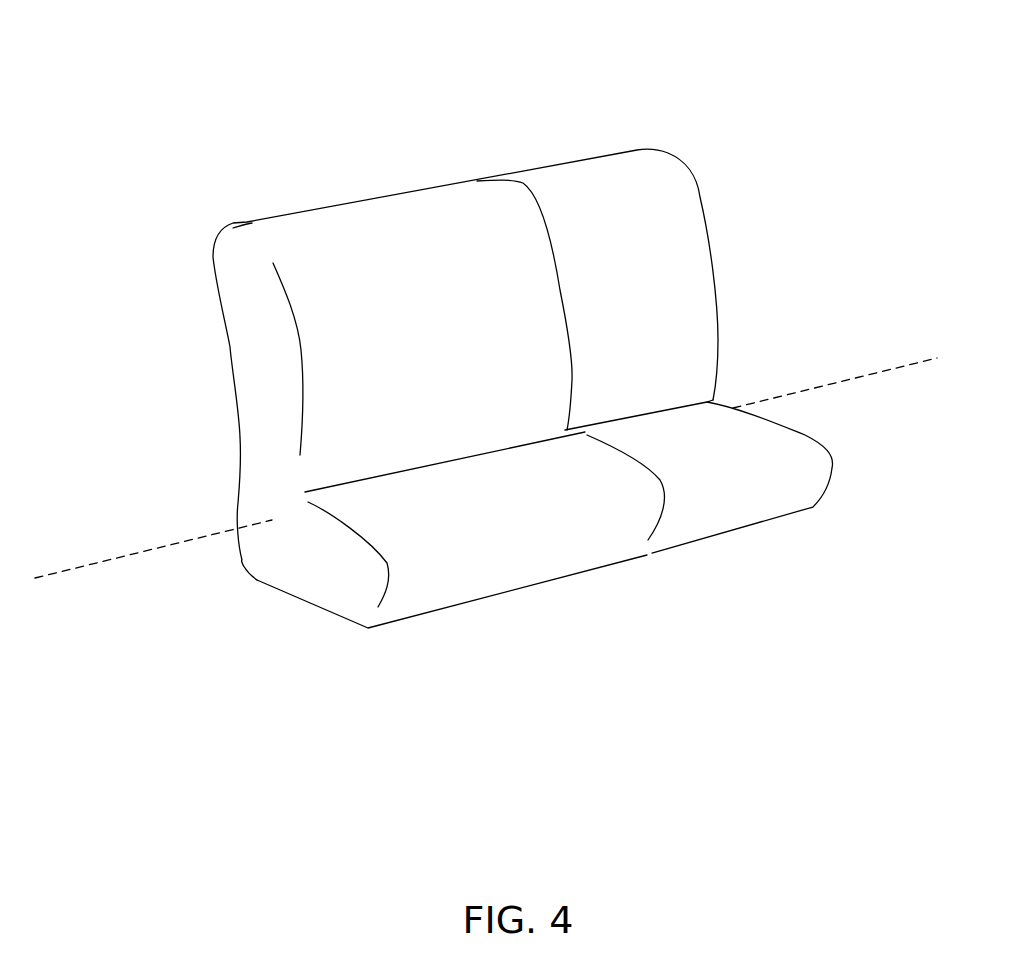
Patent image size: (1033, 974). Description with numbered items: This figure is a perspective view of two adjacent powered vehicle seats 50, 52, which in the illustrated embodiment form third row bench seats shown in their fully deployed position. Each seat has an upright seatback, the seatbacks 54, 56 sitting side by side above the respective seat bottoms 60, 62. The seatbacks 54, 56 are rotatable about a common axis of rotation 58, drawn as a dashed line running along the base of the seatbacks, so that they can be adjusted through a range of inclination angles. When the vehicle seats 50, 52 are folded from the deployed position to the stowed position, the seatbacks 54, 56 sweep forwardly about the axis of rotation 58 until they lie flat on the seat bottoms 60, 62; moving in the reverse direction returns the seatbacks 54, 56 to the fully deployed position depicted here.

The powered vehicle seat 50 is at (334, 184).
The powered vehicle seat 52 is at (574, 146).
The seatback 54 is at (400, 350).
The seatback 56 is at (620, 315).
The axis of rotation 58 is at (90, 567).
The seat bottom 60 is at (473, 518).
The seat bottom 62 is at (703, 463).